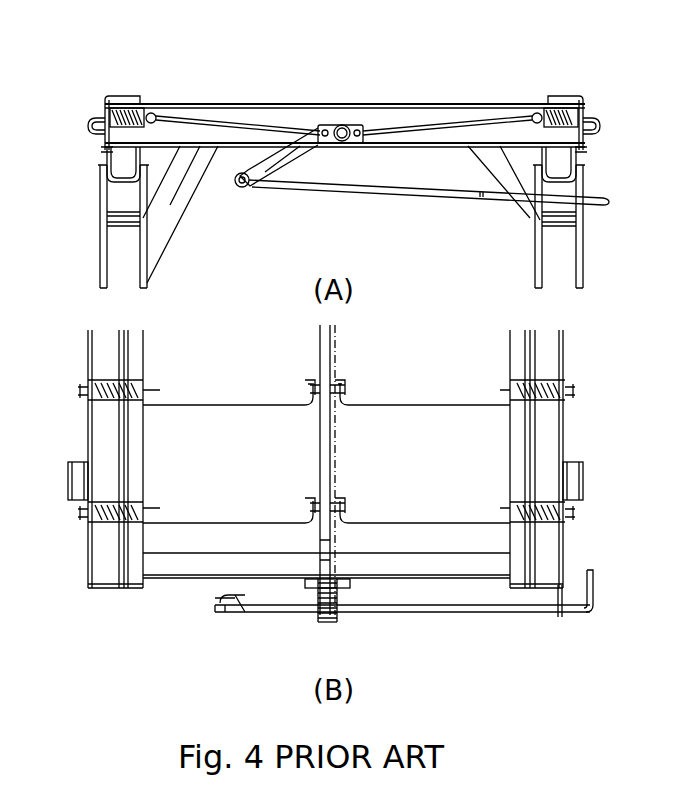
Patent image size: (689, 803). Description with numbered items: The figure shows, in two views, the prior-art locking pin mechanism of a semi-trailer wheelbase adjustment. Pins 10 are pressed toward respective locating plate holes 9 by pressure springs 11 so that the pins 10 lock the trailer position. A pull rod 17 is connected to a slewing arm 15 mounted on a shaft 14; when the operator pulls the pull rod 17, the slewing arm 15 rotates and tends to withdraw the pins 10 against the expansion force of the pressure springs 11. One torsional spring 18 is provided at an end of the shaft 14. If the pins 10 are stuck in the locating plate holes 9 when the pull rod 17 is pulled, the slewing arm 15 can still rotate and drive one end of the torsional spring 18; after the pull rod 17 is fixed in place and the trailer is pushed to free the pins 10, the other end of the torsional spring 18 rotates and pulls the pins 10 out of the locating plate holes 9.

The locating plate holes 9 is at (106, 110).
The pins 10 is at (97, 113).
The pressure springs 11 is at (128, 108).
The shaft 14 is at (340, 125).
The slewing arm 15 is at (284, 153).
The pull rod 17 is at (420, 183).
The torsional spring 18 is at (282, 612).